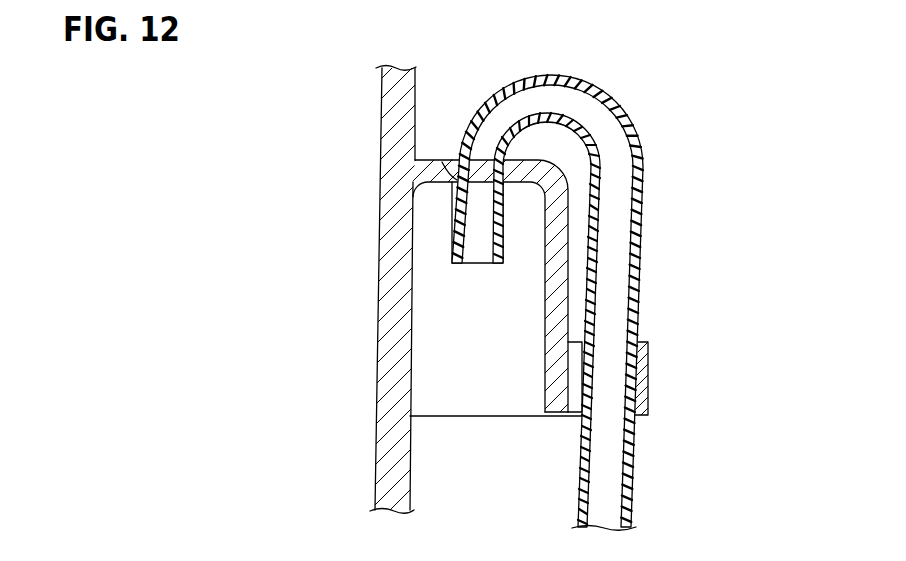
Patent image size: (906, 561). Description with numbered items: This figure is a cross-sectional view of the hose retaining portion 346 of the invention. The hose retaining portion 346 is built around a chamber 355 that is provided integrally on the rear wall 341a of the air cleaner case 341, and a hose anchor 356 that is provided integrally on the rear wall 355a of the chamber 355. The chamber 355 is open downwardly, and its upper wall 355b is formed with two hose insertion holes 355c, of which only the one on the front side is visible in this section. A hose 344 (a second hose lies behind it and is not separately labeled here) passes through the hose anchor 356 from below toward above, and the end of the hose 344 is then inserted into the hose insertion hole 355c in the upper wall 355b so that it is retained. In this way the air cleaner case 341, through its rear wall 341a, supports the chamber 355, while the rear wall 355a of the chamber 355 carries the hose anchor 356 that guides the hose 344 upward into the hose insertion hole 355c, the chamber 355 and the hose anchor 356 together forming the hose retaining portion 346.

The air cleaner case 341 is at (380, 149).
The rear wall of the air cleaner case 341a is at (385, 307).
The hose 344 is at (641, 155).
The hose retaining portion 346 is at (446, 416).
The chamber 355 is at (473, 365).
The rear wall of the chamber 355a is at (553, 290).
The upper wall of the chamber 355b is at (441, 165).
The hose insertion hole 355c is at (478, 157).
The hose anchor 356 is at (643, 383).